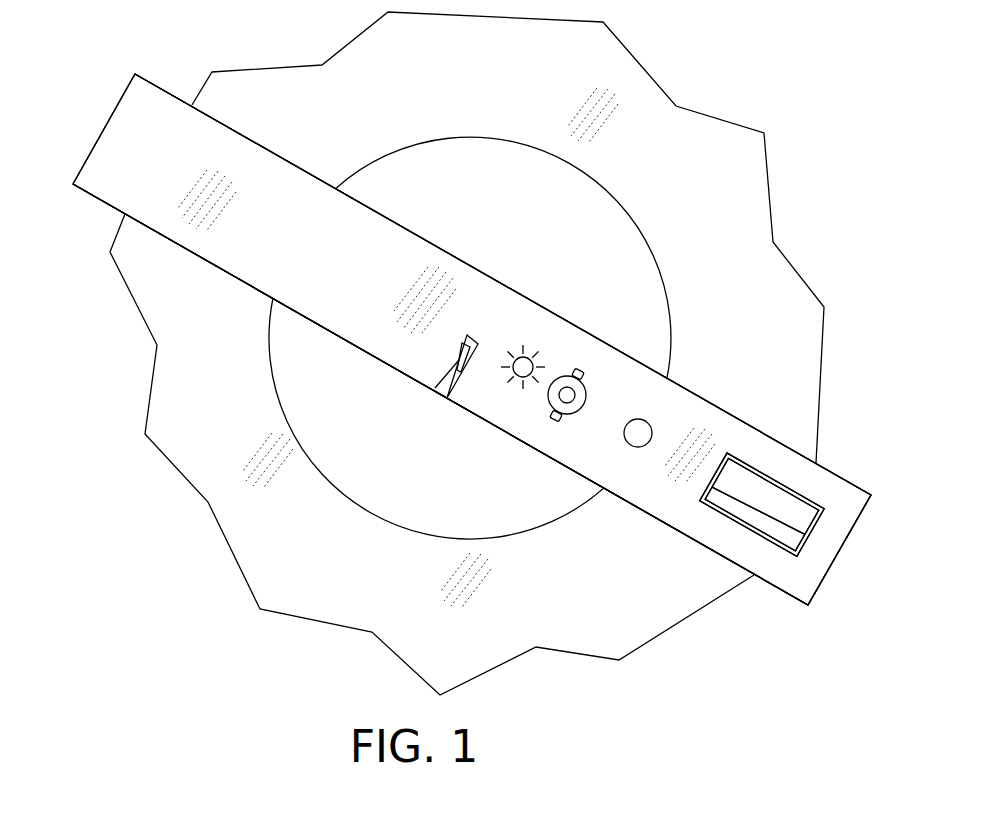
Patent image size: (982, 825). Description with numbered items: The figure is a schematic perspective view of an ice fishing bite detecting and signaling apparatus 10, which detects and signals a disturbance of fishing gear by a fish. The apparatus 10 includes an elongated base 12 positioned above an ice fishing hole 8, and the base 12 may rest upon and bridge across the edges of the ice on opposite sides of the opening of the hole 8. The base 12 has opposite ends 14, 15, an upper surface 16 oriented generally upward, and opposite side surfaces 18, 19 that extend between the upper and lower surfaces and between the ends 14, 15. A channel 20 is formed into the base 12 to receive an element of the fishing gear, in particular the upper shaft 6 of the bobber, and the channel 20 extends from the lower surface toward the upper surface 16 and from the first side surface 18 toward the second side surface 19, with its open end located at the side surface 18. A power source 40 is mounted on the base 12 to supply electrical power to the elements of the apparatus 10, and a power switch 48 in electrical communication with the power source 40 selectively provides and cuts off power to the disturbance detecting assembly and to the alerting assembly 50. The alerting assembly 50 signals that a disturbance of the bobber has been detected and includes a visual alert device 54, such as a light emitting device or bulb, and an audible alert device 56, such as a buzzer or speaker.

The upper shaft 6 is at (455, 361).
The ice fishing hole 8 is at (611, 192).
The apparatus 10 is at (516, 270).
The base 12 is at (699, 400).
The first end of base 14 is at (68, 197).
The second end of base 15 is at (834, 577).
The upper surface 16 is at (263, 272).
The first side surface 18 is at (313, 322).
The second side surface 19 is at (380, 212).
The channel 20 is at (436, 398).
The power source 40 is at (790, 478).
The power switch 48 is at (634, 447).
The alerting assembly 50 is at (591, 398).
The visual alert device 54 is at (513, 375).
The audible alert device 56 is at (563, 414).